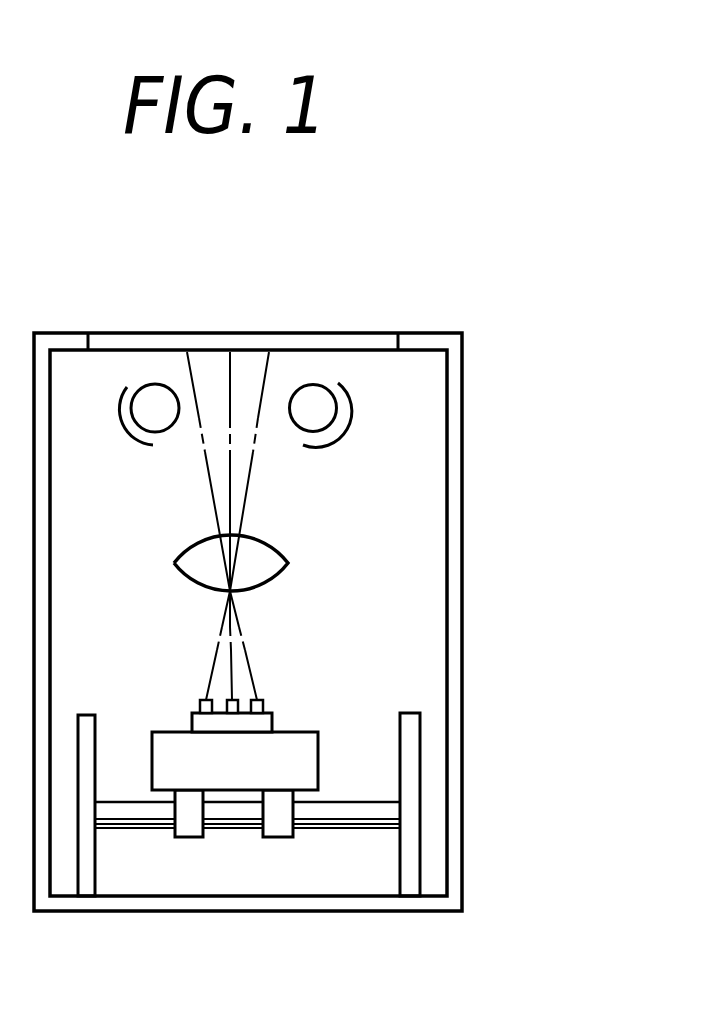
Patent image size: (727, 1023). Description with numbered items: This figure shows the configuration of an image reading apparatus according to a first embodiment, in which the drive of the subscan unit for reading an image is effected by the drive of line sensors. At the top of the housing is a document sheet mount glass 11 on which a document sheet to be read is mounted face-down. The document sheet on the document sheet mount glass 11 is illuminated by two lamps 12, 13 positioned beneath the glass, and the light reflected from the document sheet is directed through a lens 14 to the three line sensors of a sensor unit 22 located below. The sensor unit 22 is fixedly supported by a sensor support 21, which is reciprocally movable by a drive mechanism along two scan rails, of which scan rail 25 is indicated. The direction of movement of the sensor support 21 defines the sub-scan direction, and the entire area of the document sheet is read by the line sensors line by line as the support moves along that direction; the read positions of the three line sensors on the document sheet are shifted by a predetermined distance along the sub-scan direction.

The document sheet mount glass 11 is at (360, 333).
The lamp 12 is at (349, 408).
The lamp 13 is at (120, 427).
The lens 14 is at (283, 551).
The sensor support 21 is at (150, 752).
The sensor unit 22 is at (272, 712).
The scan rail 25 is at (117, 828).